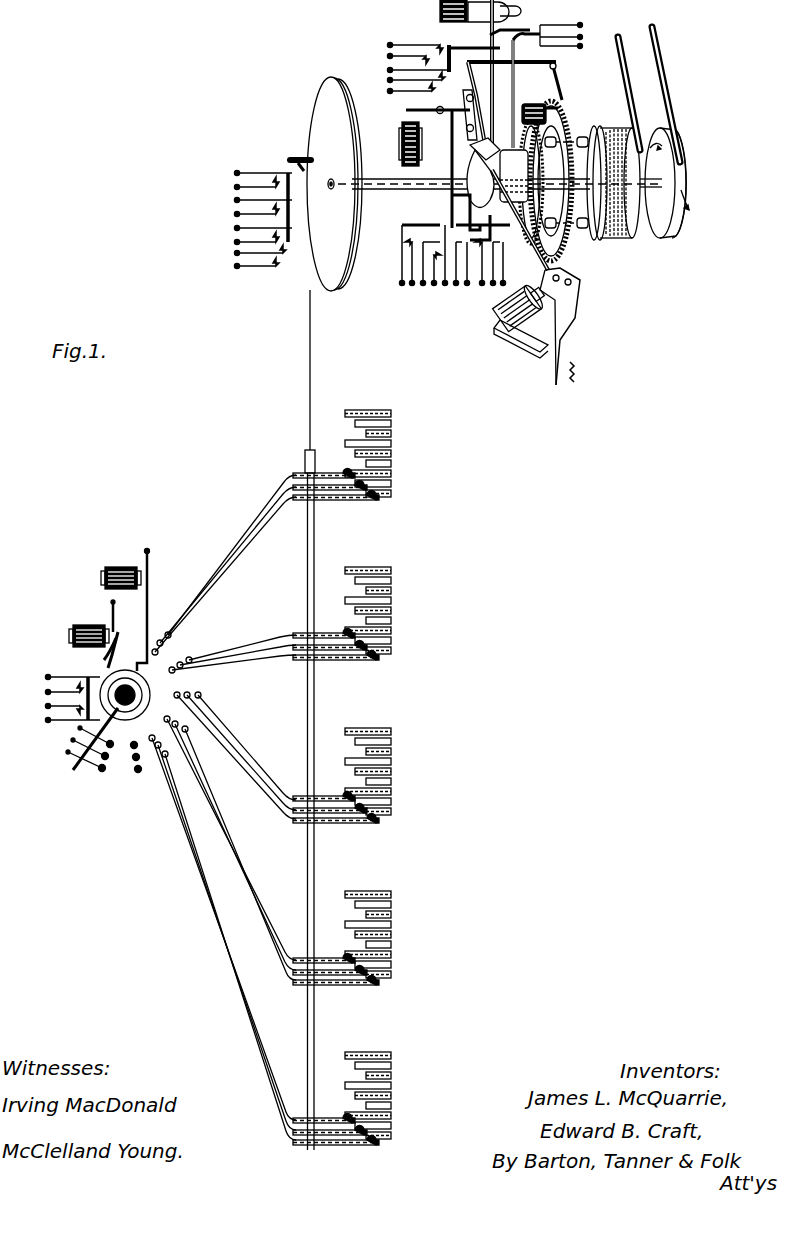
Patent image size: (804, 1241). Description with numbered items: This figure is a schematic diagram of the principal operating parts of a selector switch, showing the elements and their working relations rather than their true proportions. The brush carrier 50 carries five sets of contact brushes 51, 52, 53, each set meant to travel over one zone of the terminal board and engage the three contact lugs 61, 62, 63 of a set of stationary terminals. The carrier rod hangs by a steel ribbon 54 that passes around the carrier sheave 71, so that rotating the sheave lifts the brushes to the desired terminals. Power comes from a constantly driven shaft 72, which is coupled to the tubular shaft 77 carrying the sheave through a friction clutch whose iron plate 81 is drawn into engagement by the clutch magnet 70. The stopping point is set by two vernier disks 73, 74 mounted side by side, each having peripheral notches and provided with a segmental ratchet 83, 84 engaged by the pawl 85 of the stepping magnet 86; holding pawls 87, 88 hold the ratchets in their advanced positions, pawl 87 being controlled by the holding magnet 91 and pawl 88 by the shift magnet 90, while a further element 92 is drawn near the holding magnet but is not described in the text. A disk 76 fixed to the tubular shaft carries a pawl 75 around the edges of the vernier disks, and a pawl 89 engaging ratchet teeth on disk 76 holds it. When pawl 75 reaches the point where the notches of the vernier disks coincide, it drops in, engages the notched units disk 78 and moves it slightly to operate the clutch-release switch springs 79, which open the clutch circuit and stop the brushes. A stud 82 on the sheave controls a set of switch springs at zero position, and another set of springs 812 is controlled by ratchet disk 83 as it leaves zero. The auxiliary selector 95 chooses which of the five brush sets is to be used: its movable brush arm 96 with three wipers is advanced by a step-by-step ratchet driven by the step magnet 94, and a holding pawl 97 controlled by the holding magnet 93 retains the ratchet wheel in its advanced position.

The brush carrier 50 is at (306, 550).
The contact brush 51 is at (334, 480).
The contact brush 52 is at (346, 491).
The contact brush 53 is at (360, 500).
The steel ribbon 54 is at (313, 349).
The contact lug 61 is at (391, 468).
The contact lug 62 is at (393, 477).
The contact lug 63 is at (391, 488).
The clutch magnet 70 is at (622, 236).
The carrier sheave 71 is at (334, 184).
The driving shaft 72 is at (654, 190).
The vernier disk 73 is at (540, 228).
The vernier disk 74 is at (534, 238).
The pawl 75 is at (530, 104).
The disk 76 is at (562, 108).
The tubular shaft 77 is at (380, 190).
The units disk 78 is at (566, 182).
The clutch-release switch springs 79 is at (572, 30).
The friction plate 81 is at (597, 238).
The stud 82 is at (296, 157).
The segmental ratchet 83 is at (470, 160).
The segmental ratchet 84 is at (478, 206).
The pawl of stepping magnet 85 is at (514, 176).
The stepping magnet 86 is at (545, 330).
The holding pawl 87 is at (478, 146).
The holding pawl 88 is at (466, 94).
The pawl 89 is at (558, 71).
The shift magnet 90 is at (402, 129).
The holding magnet 91 is at (440, 18).
The rod 92 is at (496, 62).
The holding magnet 93 is at (86, 625).
The step magnet 94 is at (119, 567).
The auxiliary selector 95 is at (222, 807).
The movable brush arm 96 is at (75, 762).
The holding pawl 97 is at (110, 658).
The switch springs 812 is at (486, 270).